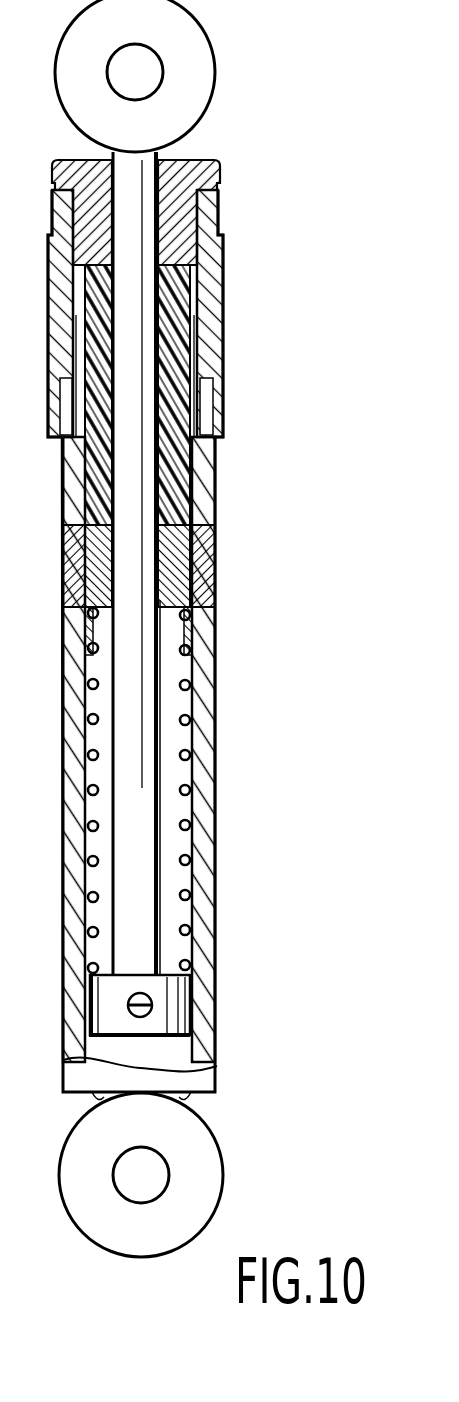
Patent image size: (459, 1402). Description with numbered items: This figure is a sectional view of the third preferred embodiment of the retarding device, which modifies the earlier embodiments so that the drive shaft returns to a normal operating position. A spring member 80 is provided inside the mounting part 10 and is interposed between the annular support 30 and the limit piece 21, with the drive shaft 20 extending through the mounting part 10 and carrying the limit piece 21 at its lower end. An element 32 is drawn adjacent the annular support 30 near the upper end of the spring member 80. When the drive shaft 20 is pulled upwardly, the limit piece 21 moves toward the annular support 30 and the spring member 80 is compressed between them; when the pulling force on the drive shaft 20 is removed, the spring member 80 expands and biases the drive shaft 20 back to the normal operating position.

The mounting part 10 is at (224, 741).
The drive shaft 20 is at (163, 700).
The limit piece 21 is at (180, 994).
The annular support 30 is at (168, 556).
The guide ring / stop 32 is at (203, 600).
The spring member 80 is at (186, 798).